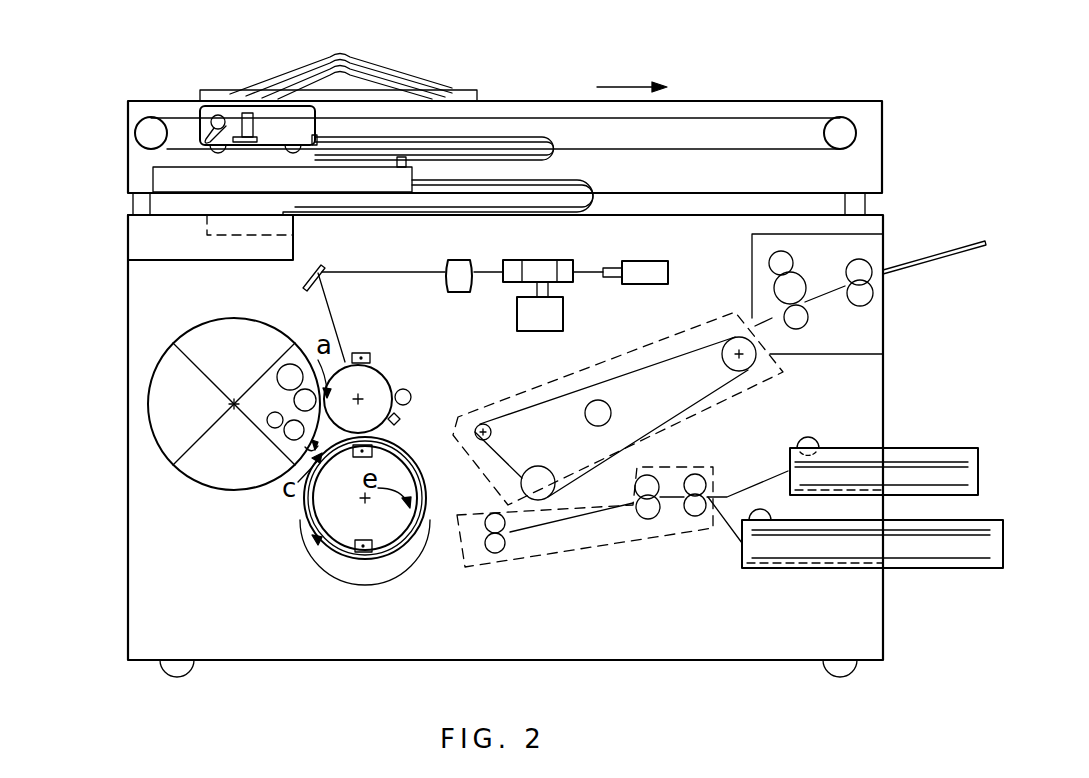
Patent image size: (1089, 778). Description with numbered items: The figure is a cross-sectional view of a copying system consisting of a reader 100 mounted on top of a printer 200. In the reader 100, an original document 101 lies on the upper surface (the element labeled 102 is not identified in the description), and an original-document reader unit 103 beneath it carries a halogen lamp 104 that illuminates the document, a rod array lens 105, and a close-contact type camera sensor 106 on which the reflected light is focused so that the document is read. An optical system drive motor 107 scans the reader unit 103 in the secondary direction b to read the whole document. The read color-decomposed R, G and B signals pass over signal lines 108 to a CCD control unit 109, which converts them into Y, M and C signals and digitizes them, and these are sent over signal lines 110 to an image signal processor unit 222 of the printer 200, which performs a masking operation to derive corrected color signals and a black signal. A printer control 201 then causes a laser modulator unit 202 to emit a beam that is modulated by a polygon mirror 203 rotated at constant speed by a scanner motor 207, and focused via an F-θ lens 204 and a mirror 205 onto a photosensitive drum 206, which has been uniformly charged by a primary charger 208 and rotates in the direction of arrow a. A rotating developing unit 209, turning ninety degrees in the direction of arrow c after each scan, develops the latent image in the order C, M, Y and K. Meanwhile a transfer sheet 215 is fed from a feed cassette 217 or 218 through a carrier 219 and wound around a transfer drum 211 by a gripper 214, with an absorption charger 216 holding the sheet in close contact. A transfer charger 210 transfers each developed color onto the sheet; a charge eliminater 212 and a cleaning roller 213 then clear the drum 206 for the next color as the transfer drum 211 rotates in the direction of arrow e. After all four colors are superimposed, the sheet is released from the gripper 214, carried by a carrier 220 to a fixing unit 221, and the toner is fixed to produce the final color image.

The reader 100 is at (872, 112).
The original document 101 is at (418, 82).
The platen glass 102 is at (540, 101).
The original-document reader unit 103 is at (263, 108).
The halogen lamp 104 is at (213, 116).
The rod array lens 105 is at (245, 112).
The close-contact type camera sensor 106 is at (258, 137).
The optical system drive motor 107 is at (152, 117).
The signal lines 108 is at (556, 140).
The CCD control unit 109 is at (153, 180).
The signal lines 110 is at (600, 180).
The printer 200 is at (855, 641).
The printer control 201 is at (130, 240).
The laser modulator unit 202 is at (670, 265).
The polygon mirror 203 is at (565, 258).
The F-θ lens 204 is at (460, 262).
The mirror 205 is at (322, 262).
The photosensitive drum 206 is at (380, 372).
The scanner motor 207 is at (565, 304).
The primary charger 208 is at (360, 352).
The rotating developing unit 209 is at (265, 320).
The transfer charger 210 is at (400, 442).
The transfer drum 211 is at (418, 480).
The charge eliminater 212 is at (400, 414).
The cleaning roller 213 is at (407, 388).
The gripper 214 is at (318, 547).
The transfer sheet 215 is at (373, 562).
The absorption charger 216 is at (352, 556).
The feed cassette 217 is at (978, 460).
The feed cassette 218 is at (1003, 535).
The carrier 219 is at (611, 548).
The carrier 220 is at (650, 350).
The fixing unit 221 is at (872, 248).
The image signal processor unit 222 is at (295, 222).